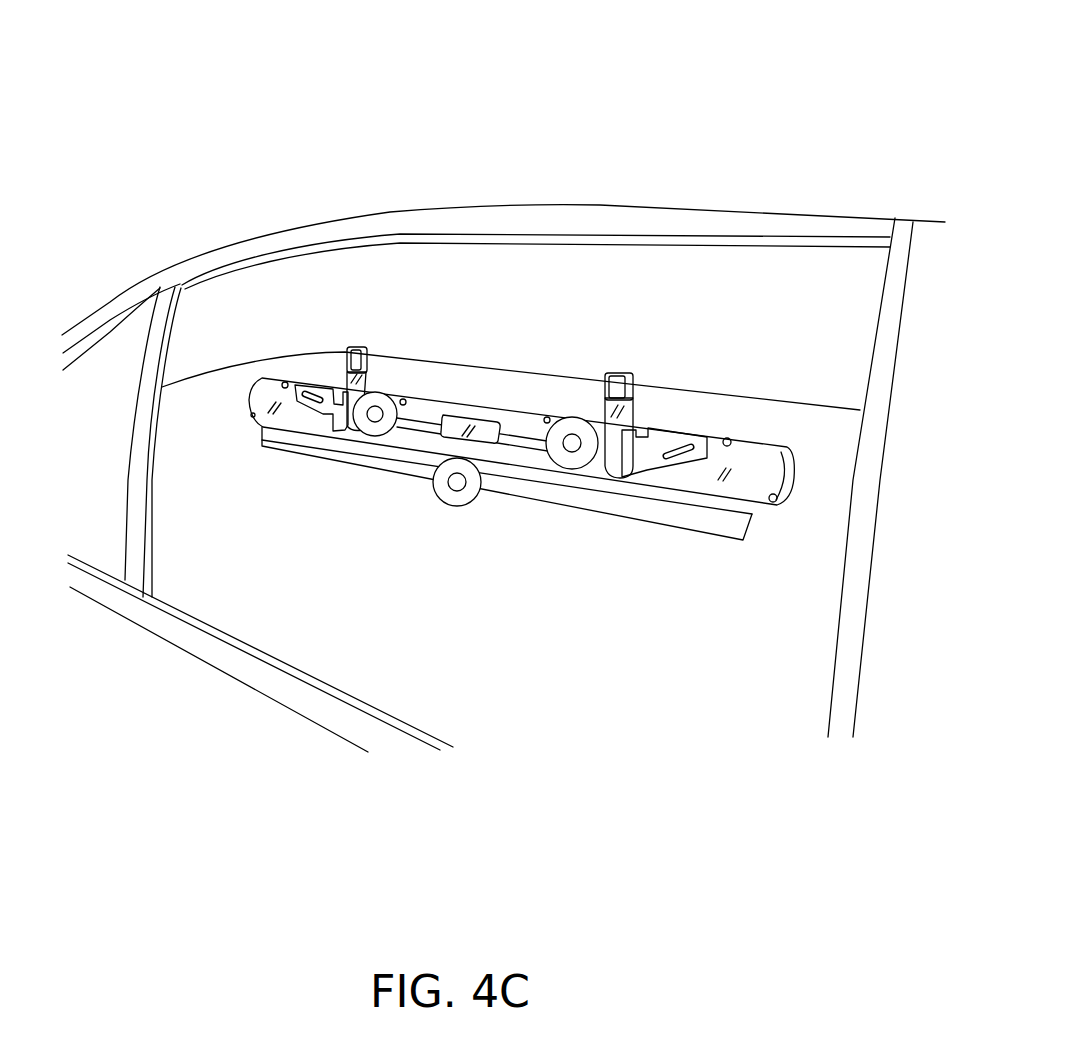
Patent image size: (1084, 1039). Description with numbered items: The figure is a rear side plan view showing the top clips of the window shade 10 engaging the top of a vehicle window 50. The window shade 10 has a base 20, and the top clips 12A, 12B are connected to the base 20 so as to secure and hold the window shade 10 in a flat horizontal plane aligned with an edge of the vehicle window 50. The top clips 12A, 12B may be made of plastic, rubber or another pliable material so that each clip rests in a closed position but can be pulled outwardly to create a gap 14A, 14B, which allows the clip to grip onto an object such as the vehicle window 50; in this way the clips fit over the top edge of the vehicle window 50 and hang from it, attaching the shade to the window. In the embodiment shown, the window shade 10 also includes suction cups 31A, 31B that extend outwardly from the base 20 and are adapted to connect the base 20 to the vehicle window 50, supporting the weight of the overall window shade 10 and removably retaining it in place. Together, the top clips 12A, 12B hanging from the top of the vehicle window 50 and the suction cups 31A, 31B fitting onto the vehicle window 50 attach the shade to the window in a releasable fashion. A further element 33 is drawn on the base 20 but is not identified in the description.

The window shade 10 is at (570, 62).
The vehicle window 50 is at (252, 623).
The base 20 is at (413, 427).
The top clip 12A is at (622, 385).
The top clip 12B is at (357, 347).
The gap 14A is at (638, 386).
The gap 14B is at (372, 352).
The suction cup 31A is at (569, 462).
The suction cup 31B is at (373, 428).
The third pulley 33 is at (457, 497).